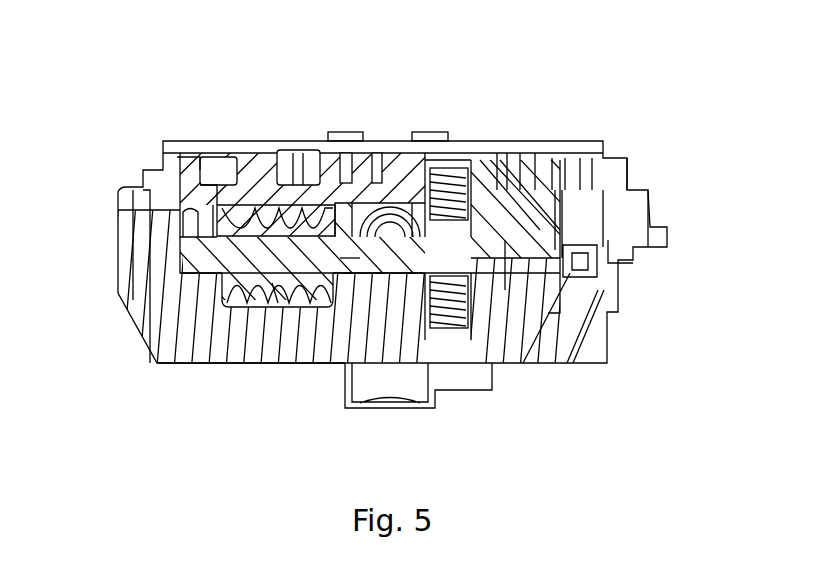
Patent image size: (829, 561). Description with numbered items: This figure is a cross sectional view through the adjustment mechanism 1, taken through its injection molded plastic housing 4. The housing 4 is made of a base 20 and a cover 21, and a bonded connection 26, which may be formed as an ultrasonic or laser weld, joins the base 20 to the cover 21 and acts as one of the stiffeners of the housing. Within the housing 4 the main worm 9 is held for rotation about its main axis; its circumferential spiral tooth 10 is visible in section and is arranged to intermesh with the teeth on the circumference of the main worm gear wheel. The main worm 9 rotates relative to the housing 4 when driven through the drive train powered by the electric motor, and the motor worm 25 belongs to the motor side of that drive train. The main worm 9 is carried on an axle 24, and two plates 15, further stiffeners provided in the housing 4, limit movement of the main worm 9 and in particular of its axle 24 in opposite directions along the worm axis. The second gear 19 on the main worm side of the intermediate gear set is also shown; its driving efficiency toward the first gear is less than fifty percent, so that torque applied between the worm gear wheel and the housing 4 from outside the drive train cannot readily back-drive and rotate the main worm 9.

The adjustment mechanism 1 is at (113, 70).
The injection molded plastic housing 4 is at (146, 398).
The main worm 9 is at (279, 318).
The circumferential spiral tooth 10 is at (236, 306).
The plate 15 is at (180, 248).
The second gear 19 is at (456, 196).
The base 20 is at (160, 327).
The cover 21 is at (165, 180).
The axle of main worm 24 is at (350, 258).
The motor worm 25 is at (393, 234).
The bonded connection 26 is at (142, 216).